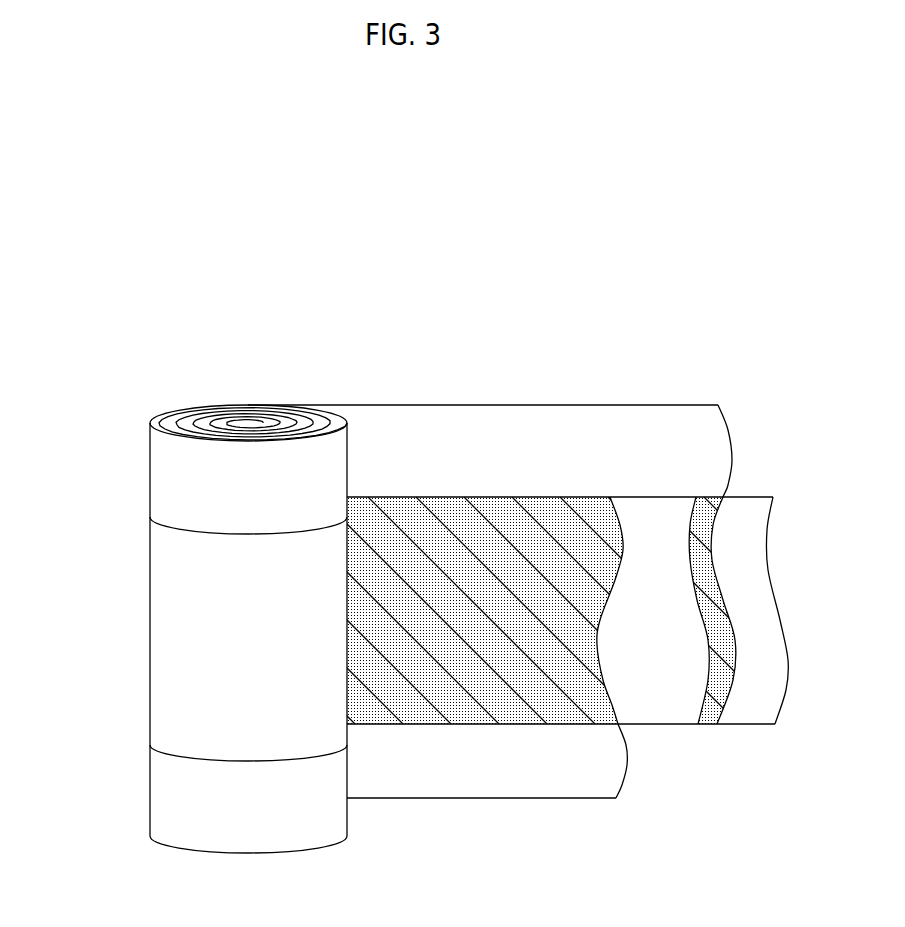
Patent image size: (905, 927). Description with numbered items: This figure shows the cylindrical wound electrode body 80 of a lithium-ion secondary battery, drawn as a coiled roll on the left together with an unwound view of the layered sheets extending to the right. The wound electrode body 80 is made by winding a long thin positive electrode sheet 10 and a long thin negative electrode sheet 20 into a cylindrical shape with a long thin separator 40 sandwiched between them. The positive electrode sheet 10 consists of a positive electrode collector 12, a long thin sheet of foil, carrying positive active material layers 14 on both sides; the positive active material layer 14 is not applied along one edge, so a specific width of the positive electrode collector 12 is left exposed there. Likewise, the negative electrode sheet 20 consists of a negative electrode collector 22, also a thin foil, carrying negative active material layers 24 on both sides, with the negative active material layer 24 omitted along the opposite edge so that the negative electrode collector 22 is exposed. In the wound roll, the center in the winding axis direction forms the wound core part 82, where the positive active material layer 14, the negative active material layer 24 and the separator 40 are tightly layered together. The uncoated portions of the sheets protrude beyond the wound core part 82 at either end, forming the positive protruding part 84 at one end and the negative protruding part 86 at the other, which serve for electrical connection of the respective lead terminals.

The positive electrode sheet 10 is at (385, 802).
The positive electrode collector 12 is at (462, 780).
The positive active material layer 14 is at (567, 708).
The negative electrode sheet 20 is at (451, 402).
The negative electrode collector 22 is at (685, 418).
The negative active material layer 24 is at (705, 500).
The separator 40 is at (645, 703).
The wound electrode body 80 is at (149, 386).
The wound core part 82 is at (163, 647).
The positive protruding part 84 is at (163, 794).
The negative protruding part 86 is at (163, 497).